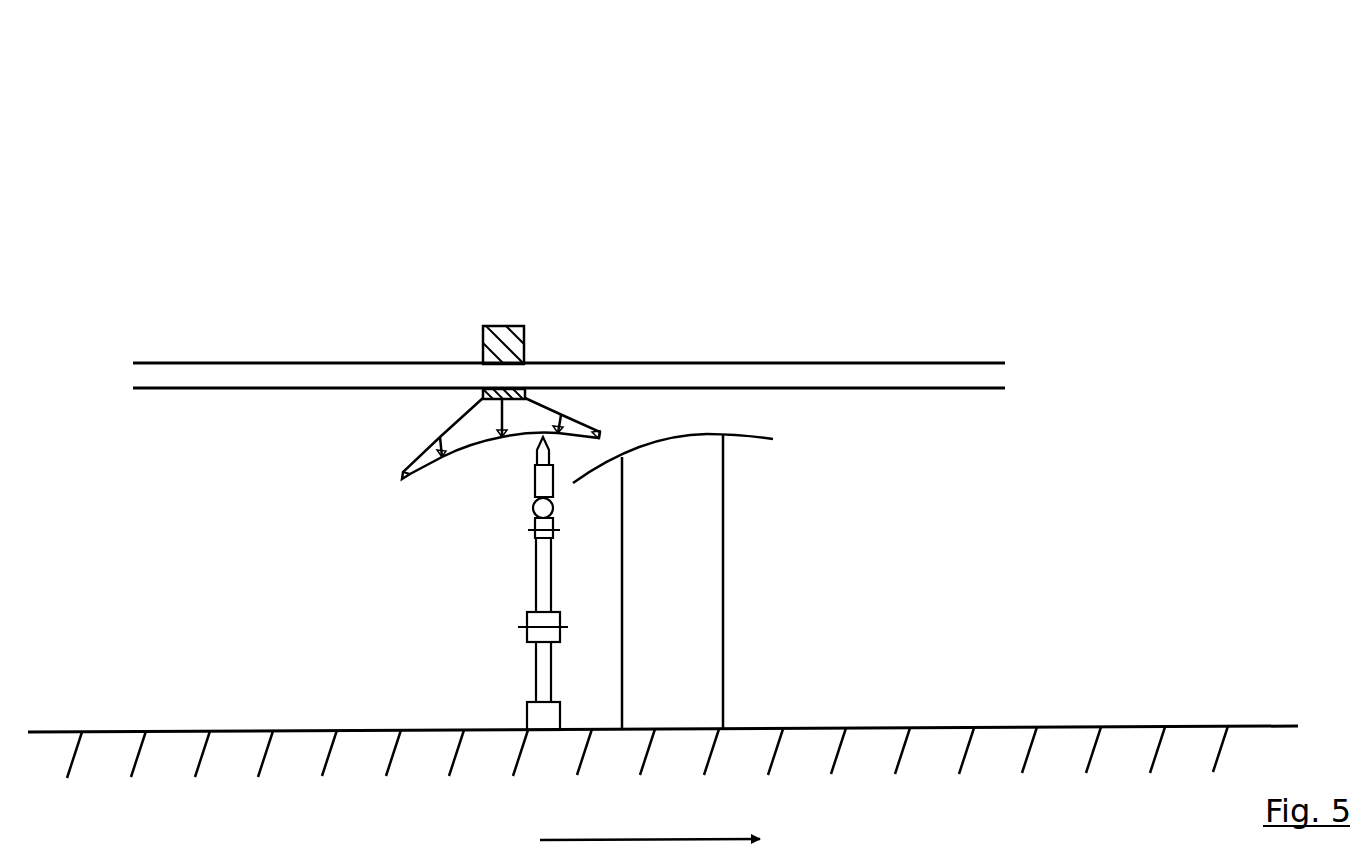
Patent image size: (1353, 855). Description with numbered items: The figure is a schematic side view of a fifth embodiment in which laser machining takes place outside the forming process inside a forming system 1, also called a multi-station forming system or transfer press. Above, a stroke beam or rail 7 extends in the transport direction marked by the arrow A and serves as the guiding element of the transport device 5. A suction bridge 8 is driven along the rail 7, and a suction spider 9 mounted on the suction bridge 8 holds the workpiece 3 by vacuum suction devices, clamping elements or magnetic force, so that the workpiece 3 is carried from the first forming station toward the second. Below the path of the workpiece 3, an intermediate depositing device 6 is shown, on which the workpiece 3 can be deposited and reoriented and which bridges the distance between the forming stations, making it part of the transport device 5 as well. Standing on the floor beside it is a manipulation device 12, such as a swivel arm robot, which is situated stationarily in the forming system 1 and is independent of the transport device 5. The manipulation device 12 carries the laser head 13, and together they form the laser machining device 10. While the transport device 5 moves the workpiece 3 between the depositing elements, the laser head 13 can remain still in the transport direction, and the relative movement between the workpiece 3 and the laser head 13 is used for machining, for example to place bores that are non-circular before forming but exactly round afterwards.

The forming system 1 is at (822, 190).
The workpiece 3 is at (420, 470).
The transport device 5 is at (512, 250).
The intermediate depositing device 6 is at (655, 445).
The rail 7 is at (245, 377).
The suction bridge 8 is at (483, 357).
The suction spider 9 is at (423, 443).
The laser machining device 10 is at (520, 473).
The manipulation device 12 is at (545, 575).
The laser head 13 is at (552, 458).